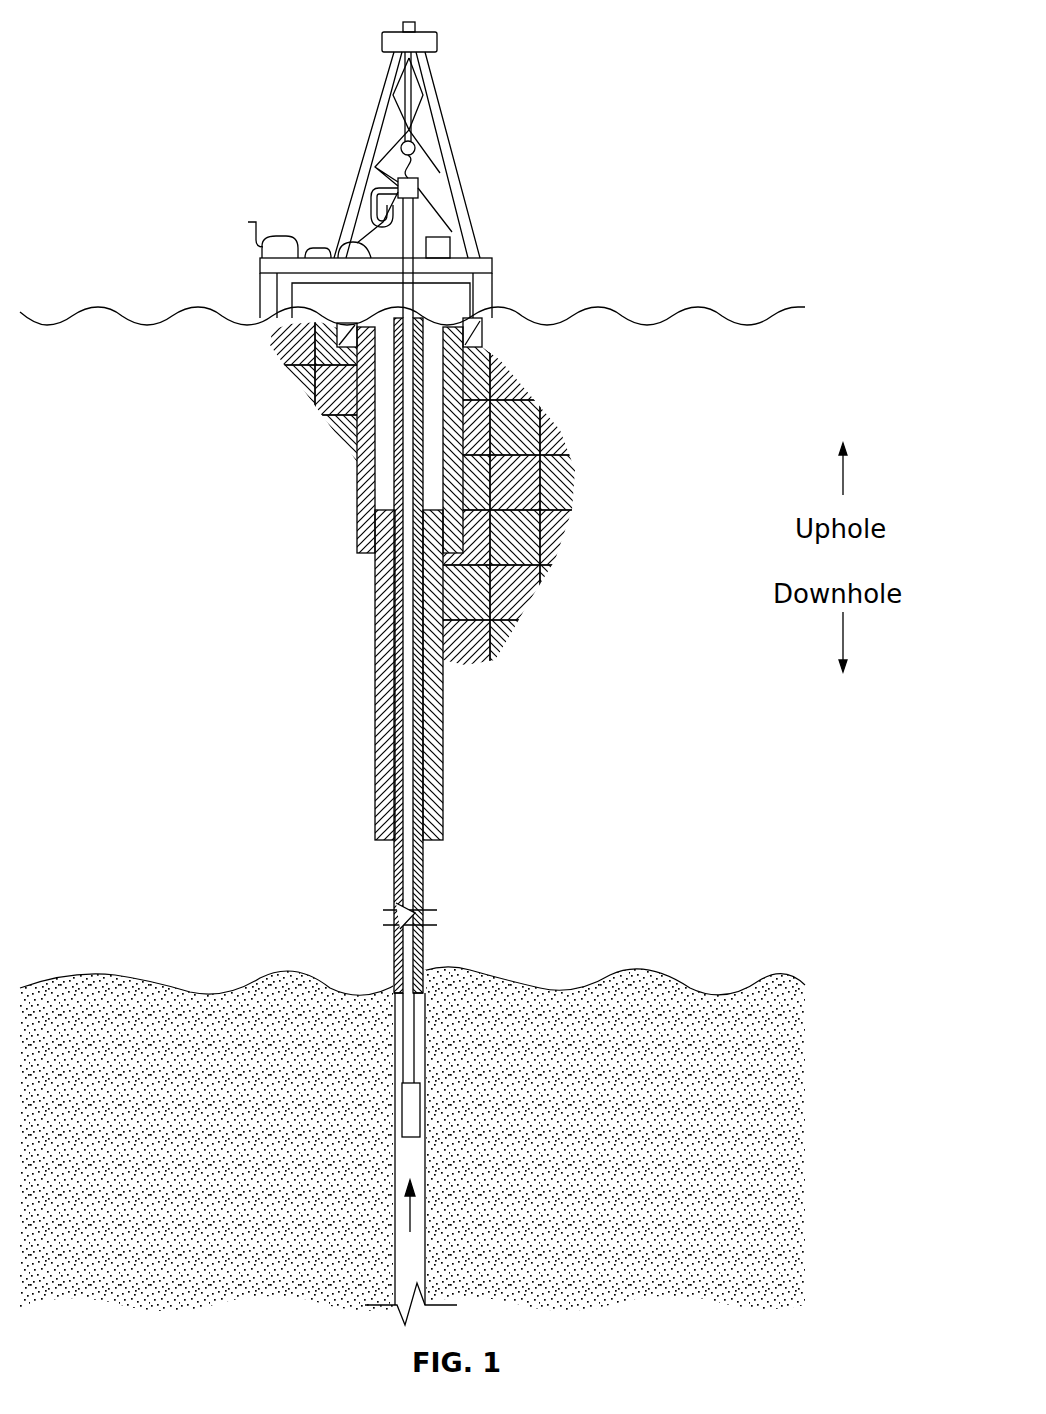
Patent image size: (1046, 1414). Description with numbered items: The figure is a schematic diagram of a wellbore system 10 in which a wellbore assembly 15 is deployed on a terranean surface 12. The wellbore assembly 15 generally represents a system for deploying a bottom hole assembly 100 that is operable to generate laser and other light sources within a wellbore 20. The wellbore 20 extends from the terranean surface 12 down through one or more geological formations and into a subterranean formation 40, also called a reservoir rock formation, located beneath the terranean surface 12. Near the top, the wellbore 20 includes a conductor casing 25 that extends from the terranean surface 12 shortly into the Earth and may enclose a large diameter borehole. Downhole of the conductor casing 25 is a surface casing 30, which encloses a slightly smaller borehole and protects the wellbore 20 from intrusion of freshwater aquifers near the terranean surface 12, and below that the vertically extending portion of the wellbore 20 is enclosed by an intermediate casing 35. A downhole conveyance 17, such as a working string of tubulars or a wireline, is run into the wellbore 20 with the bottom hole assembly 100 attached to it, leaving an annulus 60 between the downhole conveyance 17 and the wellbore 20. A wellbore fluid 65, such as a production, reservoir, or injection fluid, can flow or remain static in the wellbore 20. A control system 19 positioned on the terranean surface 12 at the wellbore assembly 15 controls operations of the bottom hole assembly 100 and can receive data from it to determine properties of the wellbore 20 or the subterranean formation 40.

The wellbore system 10 is at (103, 44).
The terranean surface 12 is at (698, 307).
The wellbore assembly 15 is at (370, 128).
The downhole conveyance 17 is at (423, 997).
The control system 19 is at (455, 250).
The wellbore 20 is at (425, 457).
The conductor casing 25 is at (487, 340).
The surface casing 30 is at (355, 470).
The intermediate casing 35 is at (375, 627).
The subterranean formation 40 is at (588, 978).
The annulus 60 is at (420, 878).
The wellbore fluid 65 is at (406, 1212).
The bottom hole assembly 100 is at (400, 1102).